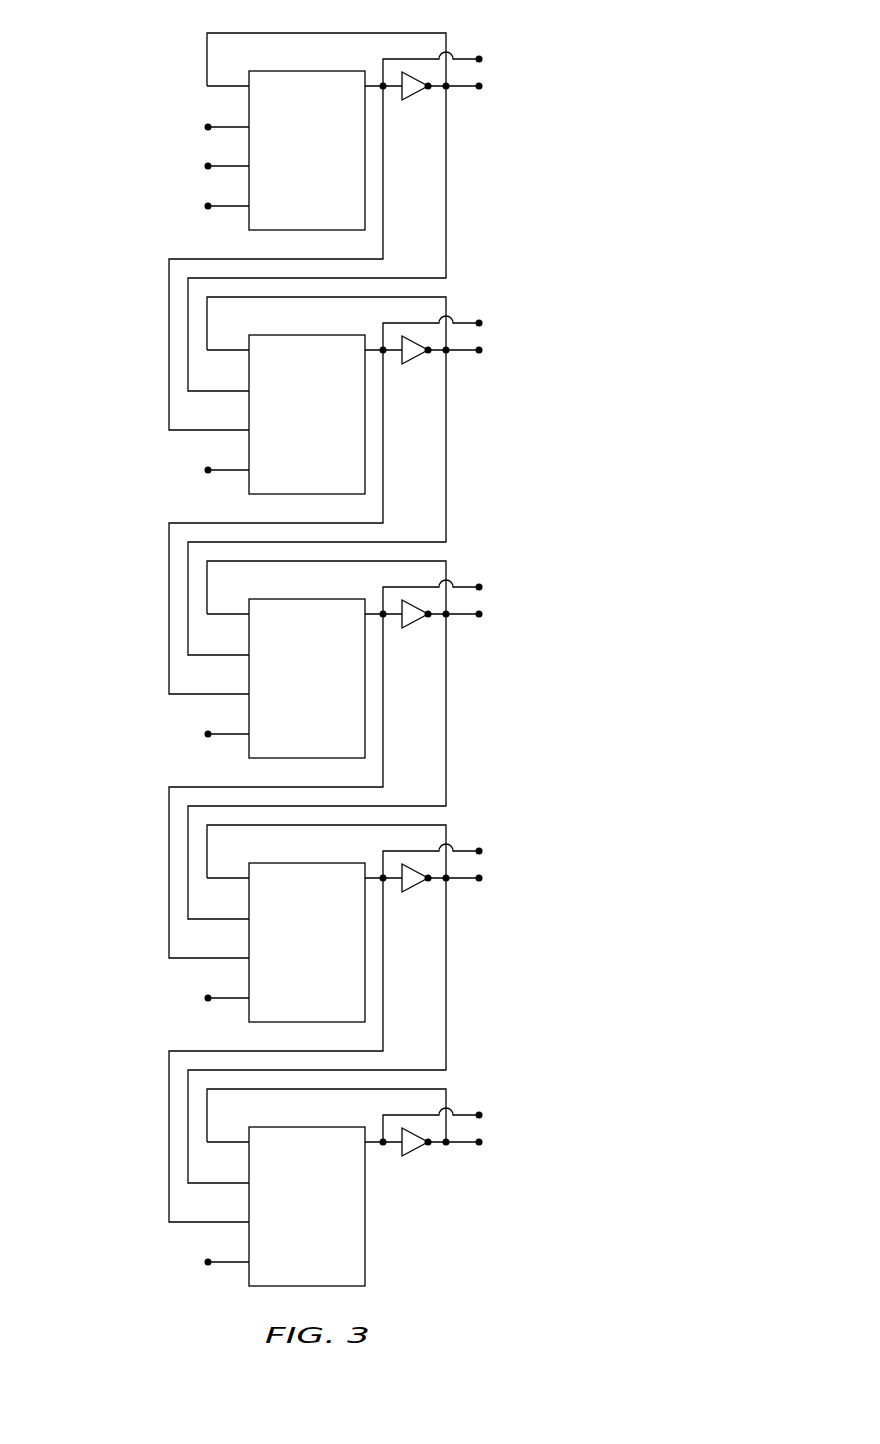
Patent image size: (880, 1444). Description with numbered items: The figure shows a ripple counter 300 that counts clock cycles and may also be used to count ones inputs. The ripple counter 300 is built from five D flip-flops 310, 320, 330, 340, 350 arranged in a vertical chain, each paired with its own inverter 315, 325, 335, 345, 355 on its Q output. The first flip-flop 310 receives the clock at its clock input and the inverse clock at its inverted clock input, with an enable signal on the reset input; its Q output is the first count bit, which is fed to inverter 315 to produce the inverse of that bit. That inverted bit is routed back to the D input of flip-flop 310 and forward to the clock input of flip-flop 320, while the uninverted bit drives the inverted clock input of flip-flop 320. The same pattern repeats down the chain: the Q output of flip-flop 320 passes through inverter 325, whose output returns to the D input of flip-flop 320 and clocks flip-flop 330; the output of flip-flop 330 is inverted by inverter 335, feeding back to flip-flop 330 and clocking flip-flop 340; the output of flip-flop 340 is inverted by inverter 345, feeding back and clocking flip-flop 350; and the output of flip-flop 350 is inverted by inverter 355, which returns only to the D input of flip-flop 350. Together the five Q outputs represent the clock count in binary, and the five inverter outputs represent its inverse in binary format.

The ripple counter 300 is at (142, 38).
The D flip-flop 310 is at (310, 71).
The inverter 315 is at (417, 100).
The D flip-flop 320 is at (310, 335).
The inverter 325 is at (417, 364).
The D flip-flop 330 is at (310, 599).
The inverter 335 is at (417, 628).
The D flip-flop 340 is at (310, 863).
The inverter 345 is at (417, 892).
The D flip-flop 350 is at (310, 1127).
The inverter 355 is at (417, 1156).